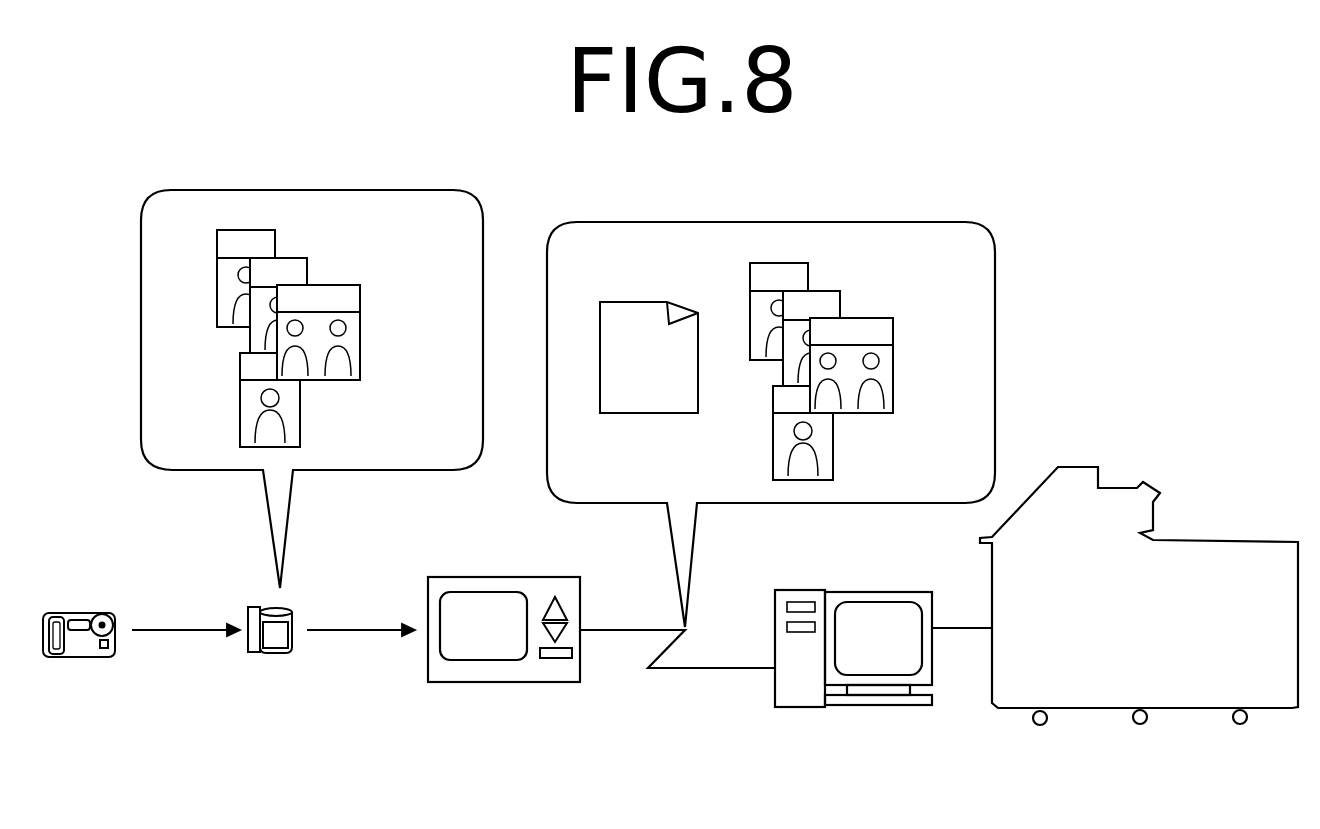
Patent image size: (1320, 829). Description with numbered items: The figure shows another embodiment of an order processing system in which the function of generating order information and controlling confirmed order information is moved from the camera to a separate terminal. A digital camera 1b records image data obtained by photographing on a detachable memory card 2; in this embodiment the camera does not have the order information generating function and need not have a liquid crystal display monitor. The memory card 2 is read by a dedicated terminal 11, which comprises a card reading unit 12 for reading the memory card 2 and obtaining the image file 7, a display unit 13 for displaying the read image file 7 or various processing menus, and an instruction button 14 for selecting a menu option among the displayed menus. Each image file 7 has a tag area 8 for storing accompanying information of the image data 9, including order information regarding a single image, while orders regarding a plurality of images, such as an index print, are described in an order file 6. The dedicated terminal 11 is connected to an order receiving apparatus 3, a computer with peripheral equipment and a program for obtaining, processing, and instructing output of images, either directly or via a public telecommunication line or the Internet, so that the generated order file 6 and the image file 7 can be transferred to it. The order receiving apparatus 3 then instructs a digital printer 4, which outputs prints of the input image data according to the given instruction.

The digital camera 1b is at (55, 657).
The memory card 2 is at (275, 655).
The order receiving apparatus 3 is at (882, 590).
The digital printer 4 is at (1250, 542).
The order file 6 is at (655, 413).
The image file 7 is at (577, 349).
The tag area 8 is at (361, 299).
The image data 9 is at (361, 355).
The dedicated terminal 11 is at (530, 641).
The card reading unit 12 is at (572, 653).
The display unit 13 is at (465, 592).
The instruction button 14 is at (560, 598).